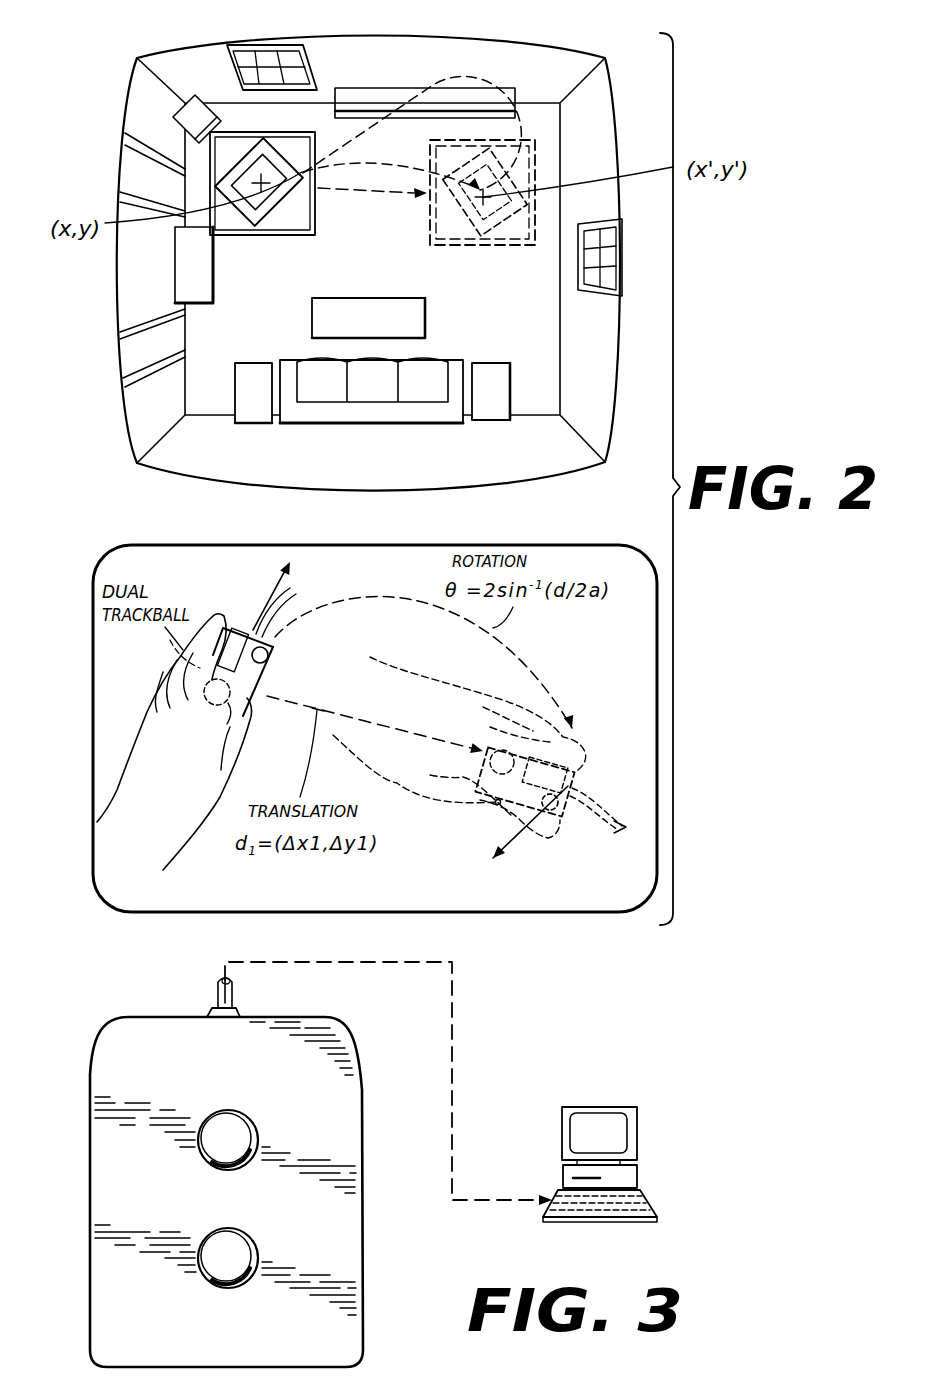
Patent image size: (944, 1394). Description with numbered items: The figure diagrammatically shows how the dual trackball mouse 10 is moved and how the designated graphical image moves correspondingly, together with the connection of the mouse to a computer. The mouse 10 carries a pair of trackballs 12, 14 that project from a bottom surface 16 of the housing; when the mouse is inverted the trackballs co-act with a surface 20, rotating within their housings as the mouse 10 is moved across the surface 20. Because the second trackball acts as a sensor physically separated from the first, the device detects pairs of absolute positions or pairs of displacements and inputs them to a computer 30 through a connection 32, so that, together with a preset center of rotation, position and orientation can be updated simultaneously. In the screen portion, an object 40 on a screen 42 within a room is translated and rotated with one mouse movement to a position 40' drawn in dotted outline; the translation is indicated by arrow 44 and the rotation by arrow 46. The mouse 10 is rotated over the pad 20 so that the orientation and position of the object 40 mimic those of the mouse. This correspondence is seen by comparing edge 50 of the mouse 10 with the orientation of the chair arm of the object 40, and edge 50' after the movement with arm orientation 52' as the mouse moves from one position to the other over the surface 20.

In FIG. 2, the mouse 10 is at (247, 627).
In FIG. 3, the mouse 10 is at (367, 1255).
In FIG. 3, the trackball 12 is at (235, 1255).
In FIG. 3, the trackball 14 is at (230, 1132).
In FIG. 3, the bottom surface 16 is at (333, 1100).
In FIG. 2, the surface 20 is at (600, 645).
In FIG. 3, the computer 30 is at (643, 1192).
In FIG. 3, the connection 32 is at (455, 1060).
In FIG. 2, the object 40 is at (262, 171).
In FIG. 2, the position 40' is at (512, 189).
In FIG. 2, the screen 42 is at (294, 32).
In FIG. 2, the arrow 44 is at (488, 331).
In FIG. 2, the arrow 46 is at (390, 157).
In FIG. 2, the edge 50 is at (287, 599).
In FIG. 2, the edge 50' is at (550, 804).
In FIG. 2, the arm orientation 52' is at (371, 195).